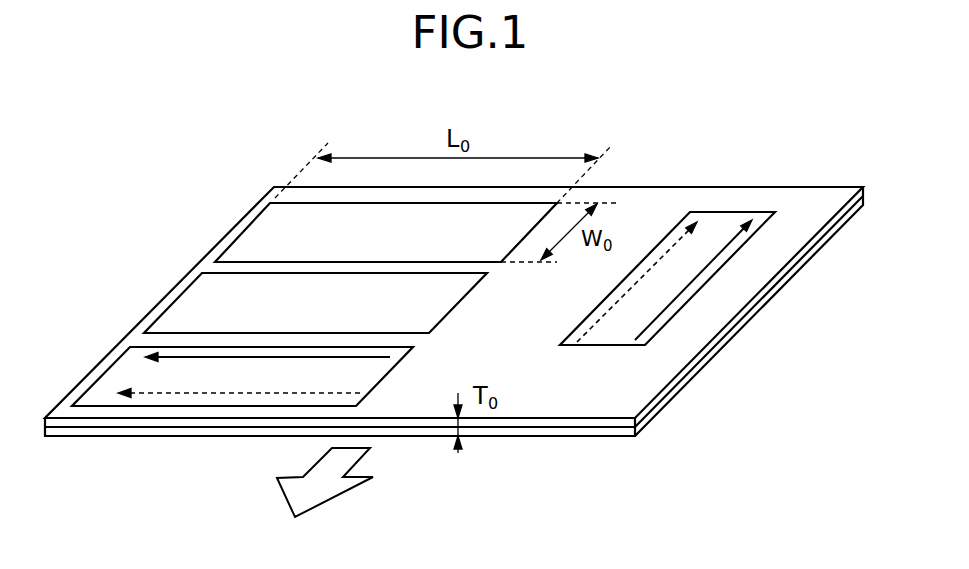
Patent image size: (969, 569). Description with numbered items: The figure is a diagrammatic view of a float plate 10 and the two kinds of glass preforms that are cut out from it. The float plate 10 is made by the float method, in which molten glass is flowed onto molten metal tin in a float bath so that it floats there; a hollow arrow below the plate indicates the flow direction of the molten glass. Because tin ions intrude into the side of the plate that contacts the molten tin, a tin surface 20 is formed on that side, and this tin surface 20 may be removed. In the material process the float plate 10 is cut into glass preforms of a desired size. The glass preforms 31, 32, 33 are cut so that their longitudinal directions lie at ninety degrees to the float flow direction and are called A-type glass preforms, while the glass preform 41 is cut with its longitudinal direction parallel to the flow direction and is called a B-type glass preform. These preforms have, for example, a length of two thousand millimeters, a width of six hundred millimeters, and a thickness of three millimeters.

The float plate 10 is at (807, 198).
The tin surface 20 is at (830, 237).
The glass preform 31 is at (132, 361).
The glass preform 32 is at (203, 289).
The glass preform 33 is at (277, 218).
The glass preform 41 is at (638, 317).